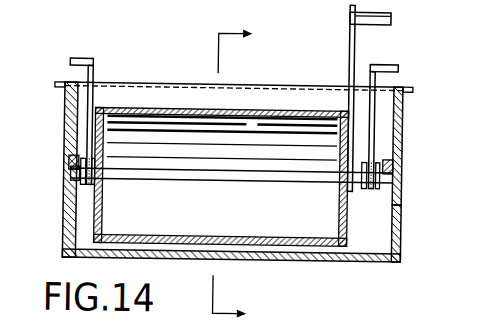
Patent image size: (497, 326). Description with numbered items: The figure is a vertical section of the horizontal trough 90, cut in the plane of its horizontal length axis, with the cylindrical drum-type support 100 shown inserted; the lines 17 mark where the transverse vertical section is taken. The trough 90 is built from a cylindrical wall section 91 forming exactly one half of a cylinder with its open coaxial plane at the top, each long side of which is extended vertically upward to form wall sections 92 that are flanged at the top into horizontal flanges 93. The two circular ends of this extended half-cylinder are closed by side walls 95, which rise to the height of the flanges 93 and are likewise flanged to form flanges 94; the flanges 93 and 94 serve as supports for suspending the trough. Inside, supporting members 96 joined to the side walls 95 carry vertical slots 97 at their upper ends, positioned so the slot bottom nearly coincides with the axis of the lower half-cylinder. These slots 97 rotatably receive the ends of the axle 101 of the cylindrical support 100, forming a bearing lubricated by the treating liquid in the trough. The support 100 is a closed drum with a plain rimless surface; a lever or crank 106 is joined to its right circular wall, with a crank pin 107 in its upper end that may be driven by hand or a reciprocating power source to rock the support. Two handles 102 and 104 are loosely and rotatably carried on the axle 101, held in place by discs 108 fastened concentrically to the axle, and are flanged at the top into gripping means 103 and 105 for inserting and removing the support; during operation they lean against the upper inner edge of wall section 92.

The section lines 17 is at (244, 173).
The trough 90 is at (407, 206).
The cylindrical wall section 91 is at (321, 258).
The wall sections 92 is at (78, 101).
The horizontal flanges 93 is at (177, 82).
The flanges 94 is at (57, 82).
The side walls 95 is at (67, 134).
The supporting members 96 is at (390, 228).
The vertical slots 97 is at (401, 178).
The cylindrical support 100 is at (283, 108).
The axle 101 is at (395, 163).
The handle 102 is at (96, 104).
The gripping means 103 is at (76, 58).
The handle 104 is at (376, 75).
The gripping means 105 is at (388, 60).
The lever or crank 106 is at (349, 47).
The crank pin 107 is at (388, 10).
The discs 108 is at (378, 181).